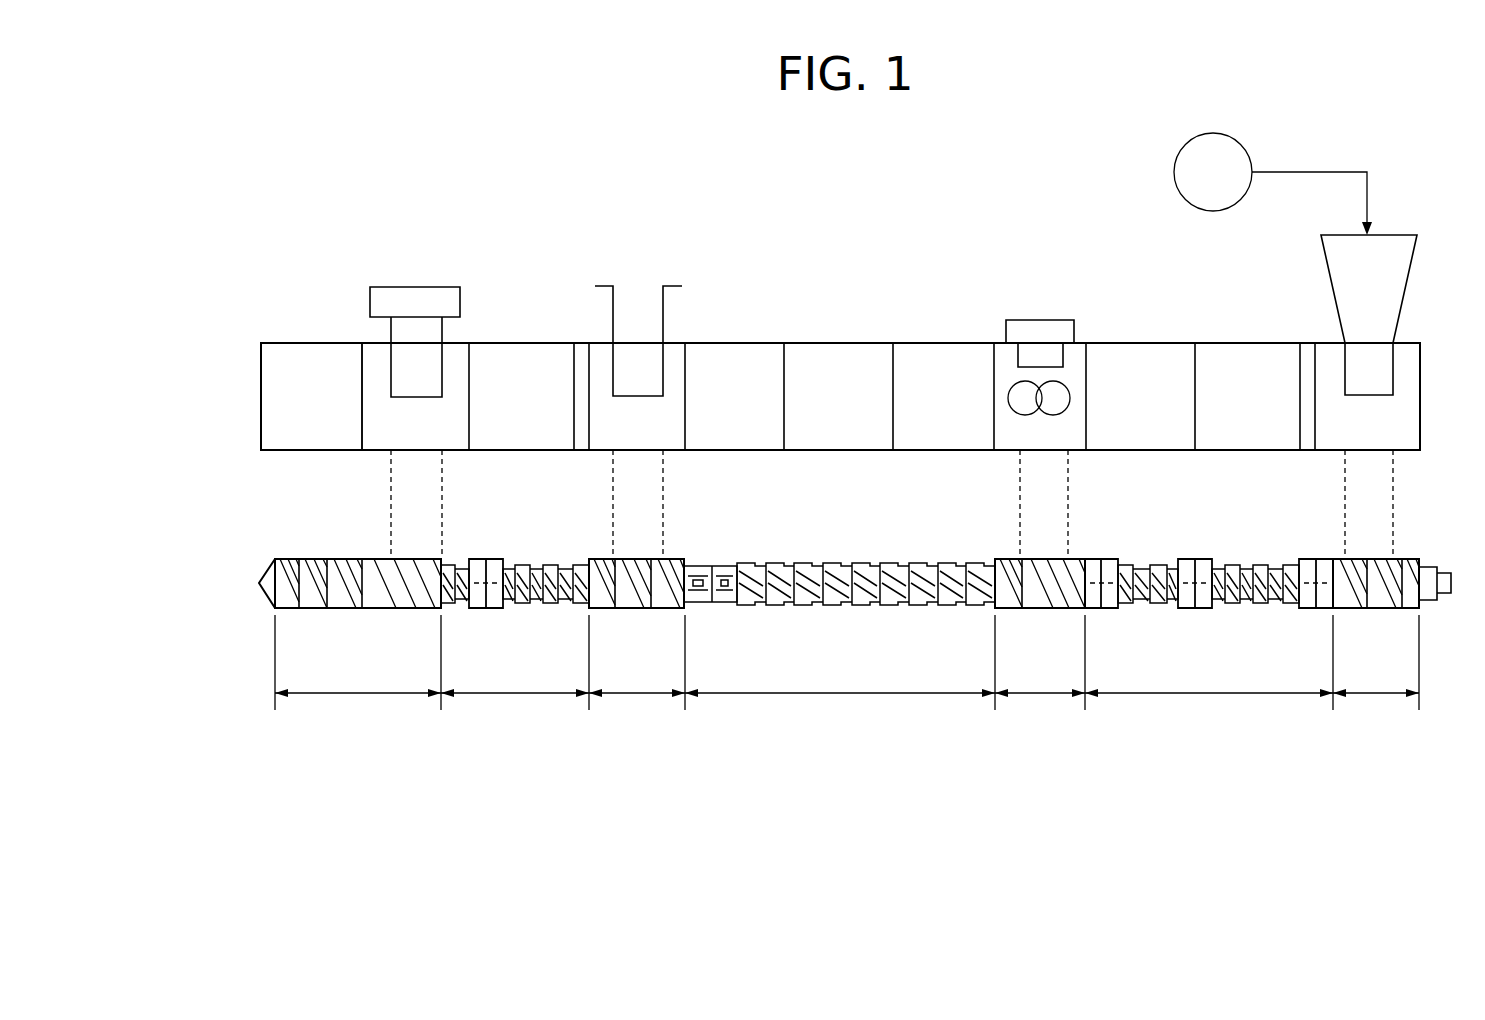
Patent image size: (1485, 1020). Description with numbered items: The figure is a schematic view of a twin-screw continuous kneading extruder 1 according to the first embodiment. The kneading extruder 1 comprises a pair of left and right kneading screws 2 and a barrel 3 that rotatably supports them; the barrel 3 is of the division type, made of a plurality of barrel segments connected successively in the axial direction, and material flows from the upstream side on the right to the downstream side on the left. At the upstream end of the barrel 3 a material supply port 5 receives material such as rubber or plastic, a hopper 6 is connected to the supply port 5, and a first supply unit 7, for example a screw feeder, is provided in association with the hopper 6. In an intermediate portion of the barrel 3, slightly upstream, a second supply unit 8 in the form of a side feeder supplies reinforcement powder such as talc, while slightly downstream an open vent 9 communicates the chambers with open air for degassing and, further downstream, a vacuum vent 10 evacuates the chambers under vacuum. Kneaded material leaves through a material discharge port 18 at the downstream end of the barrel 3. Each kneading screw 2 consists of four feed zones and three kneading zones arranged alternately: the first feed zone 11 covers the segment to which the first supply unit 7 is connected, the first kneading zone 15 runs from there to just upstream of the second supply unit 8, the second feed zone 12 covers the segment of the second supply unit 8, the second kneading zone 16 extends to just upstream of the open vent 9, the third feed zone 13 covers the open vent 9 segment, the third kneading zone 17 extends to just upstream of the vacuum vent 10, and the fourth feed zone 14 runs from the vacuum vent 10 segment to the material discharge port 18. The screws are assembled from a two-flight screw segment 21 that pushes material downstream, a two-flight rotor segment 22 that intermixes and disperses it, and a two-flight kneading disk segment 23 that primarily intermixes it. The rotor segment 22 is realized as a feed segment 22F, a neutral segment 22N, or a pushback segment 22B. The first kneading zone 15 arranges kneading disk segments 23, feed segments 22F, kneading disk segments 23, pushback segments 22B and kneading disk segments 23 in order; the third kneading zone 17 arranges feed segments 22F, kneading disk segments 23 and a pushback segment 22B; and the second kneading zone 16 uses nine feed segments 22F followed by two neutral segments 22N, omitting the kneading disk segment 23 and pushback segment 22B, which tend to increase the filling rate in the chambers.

The kneading extruder 1 is at (756, 274).
The kneading screw 2 is at (912, 564).
The barrel 3 is at (836, 344).
The material supply port 5 is at (1390, 383).
The hopper 6 is at (1359, 295).
The first supply unit 7 is at (1204, 189).
The second supply unit 8 is at (1067, 385).
The open vent 9 is at (613, 310).
The vacuum vent 10 is at (418, 295).
The first feed zone 11 is at (1376, 673).
The second feed zone 12 is at (1040, 673).
The third feed zone 13 is at (637, 673).
The fourth feed zone 14 is at (358, 673).
The first kneading zone 15 is at (1209, 673).
The second kneading zone 16 is at (840, 673).
The third kneading zone 17 is at (515, 673).
The material discharge port 18 is at (259, 390).
The two-flight screw segment 21 is at (388, 605).
The two-flight rotor segment 22 is at (841, 564).
The pushback segment 22B is at (458, 562).
The feed segment 22F is at (575, 562).
The neutral segment 22N is at (722, 605).
The two-flight kneading disk segment 23 is at (495, 605).